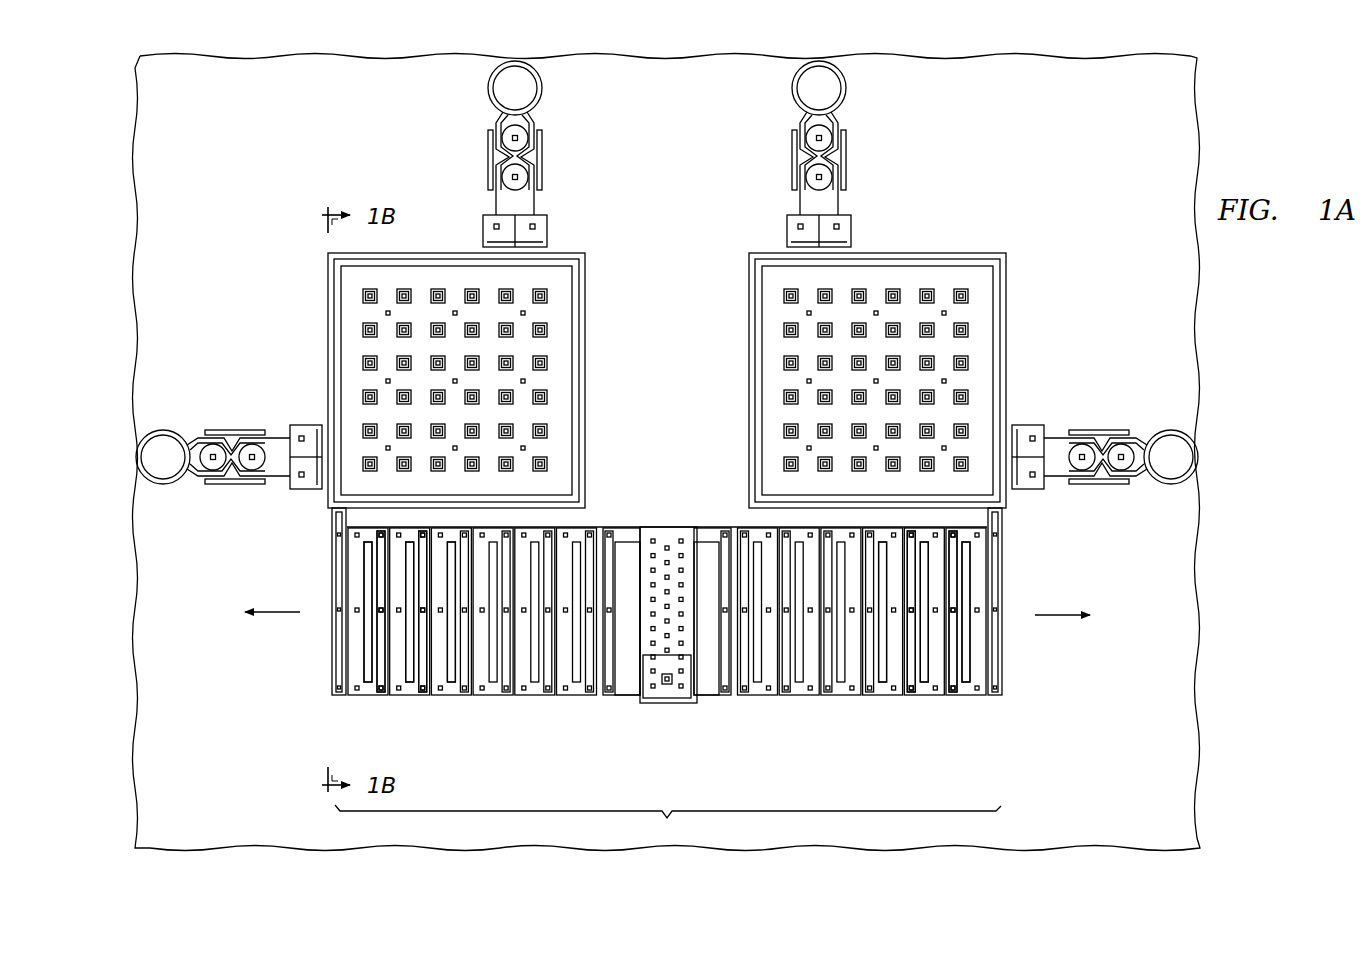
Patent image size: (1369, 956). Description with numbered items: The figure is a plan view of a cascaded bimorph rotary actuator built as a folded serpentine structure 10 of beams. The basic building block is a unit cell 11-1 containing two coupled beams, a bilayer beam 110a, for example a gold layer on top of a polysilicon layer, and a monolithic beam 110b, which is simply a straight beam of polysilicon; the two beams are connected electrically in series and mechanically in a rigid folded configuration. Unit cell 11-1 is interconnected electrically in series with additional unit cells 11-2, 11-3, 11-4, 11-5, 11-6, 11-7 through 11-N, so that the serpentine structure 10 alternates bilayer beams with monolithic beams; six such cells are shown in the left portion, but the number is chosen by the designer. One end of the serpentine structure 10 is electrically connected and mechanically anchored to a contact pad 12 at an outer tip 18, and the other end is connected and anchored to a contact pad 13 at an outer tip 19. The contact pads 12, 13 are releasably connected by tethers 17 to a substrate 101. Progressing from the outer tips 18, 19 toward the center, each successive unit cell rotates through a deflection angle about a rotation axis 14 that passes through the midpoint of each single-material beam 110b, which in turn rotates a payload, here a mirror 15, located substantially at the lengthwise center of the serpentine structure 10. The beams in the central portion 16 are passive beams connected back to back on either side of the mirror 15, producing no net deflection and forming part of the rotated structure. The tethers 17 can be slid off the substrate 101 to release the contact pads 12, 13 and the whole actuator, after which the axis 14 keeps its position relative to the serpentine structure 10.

The serpentine structure 10 is at (668, 825).
The substrate 101 is at (685, 392).
The unit cell 11-1 is at (346, 698).
The unit cell 11-2 is at (388, 698).
The unit cell 11-3 is at (430, 698).
The unit cell 11-4 is at (472, 698).
The unit cell 11-5 is at (513, 698).
The unit cell 11-6 is at (555, 698).
The unit cell 11-7 is at (790, 698).
The unit cell 11-N is at (1003, 698).
The contact pad 12 is at (355, 313).
The contact pad 13 is at (988, 316).
The rotation axis 14 is at (256, 610).
The mirror 15 is at (667, 699).
The central portion 16 is at (750, 523).
The tether 17 is at (490, 210).
The tip 18 is at (325, 517).
The tip 19 is at (1008, 514).
The bilayer beam 110a is at (338, 545).
The monolithic beam 110b is at (357, 622).